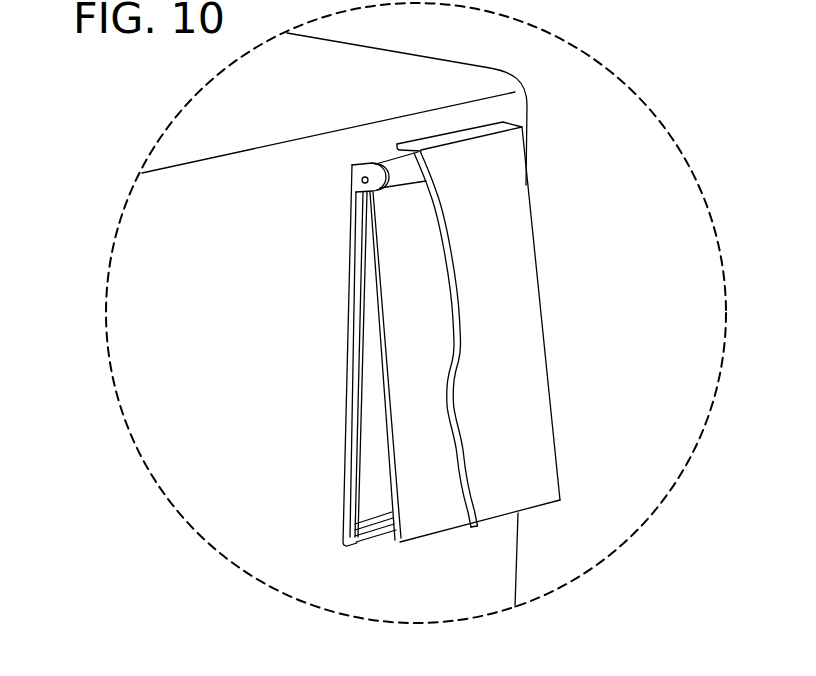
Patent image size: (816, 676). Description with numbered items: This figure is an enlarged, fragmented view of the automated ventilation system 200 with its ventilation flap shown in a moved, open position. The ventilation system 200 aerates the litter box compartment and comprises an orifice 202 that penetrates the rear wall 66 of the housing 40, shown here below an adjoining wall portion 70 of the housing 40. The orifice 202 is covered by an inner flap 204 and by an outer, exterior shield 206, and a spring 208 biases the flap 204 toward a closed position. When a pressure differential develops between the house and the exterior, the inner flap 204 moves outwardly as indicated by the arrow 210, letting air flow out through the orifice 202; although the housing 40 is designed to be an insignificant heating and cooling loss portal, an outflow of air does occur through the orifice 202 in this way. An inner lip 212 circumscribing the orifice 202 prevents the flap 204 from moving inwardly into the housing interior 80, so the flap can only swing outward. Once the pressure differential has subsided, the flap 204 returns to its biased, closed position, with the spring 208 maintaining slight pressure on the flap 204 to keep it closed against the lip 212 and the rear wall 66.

The housing 40 is at (218, 315).
The rear wall 66 is at (278, 402).
The top wall 70 is at (372, 70).
The housing interior 80 is at (375, 432).
The automated ventilation system 200 is at (310, 197).
The orifice 202 is at (348, 263).
The inner flap 204 is at (433, 432).
The exterior shield 206 is at (517, 307).
The spring 208 is at (389, 168).
The arrow 210 is at (466, 531).
The inner lip 212 is at (365, 494).